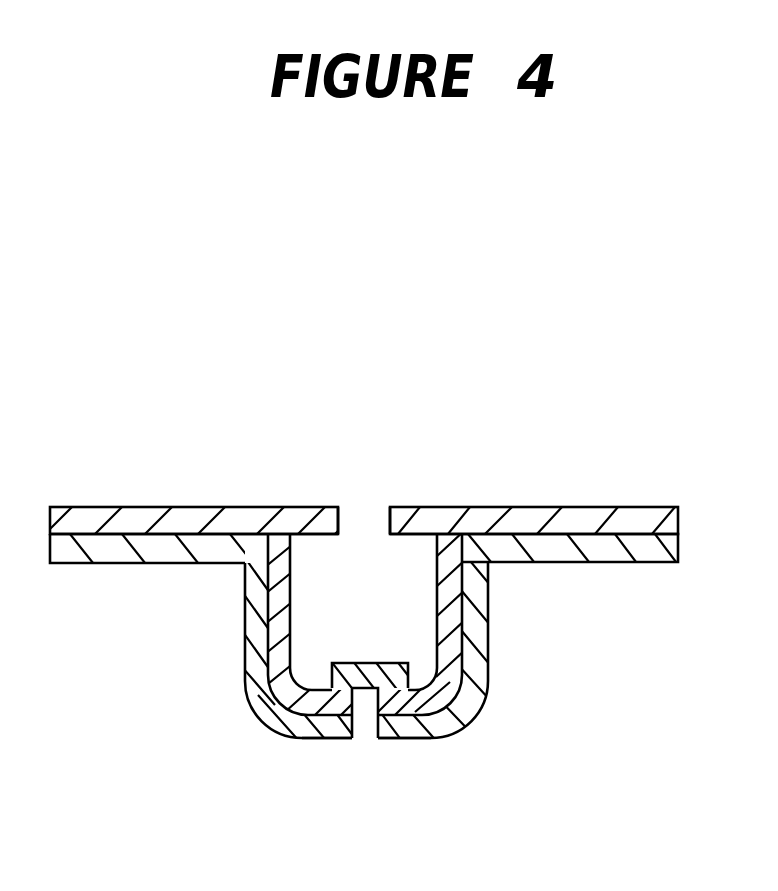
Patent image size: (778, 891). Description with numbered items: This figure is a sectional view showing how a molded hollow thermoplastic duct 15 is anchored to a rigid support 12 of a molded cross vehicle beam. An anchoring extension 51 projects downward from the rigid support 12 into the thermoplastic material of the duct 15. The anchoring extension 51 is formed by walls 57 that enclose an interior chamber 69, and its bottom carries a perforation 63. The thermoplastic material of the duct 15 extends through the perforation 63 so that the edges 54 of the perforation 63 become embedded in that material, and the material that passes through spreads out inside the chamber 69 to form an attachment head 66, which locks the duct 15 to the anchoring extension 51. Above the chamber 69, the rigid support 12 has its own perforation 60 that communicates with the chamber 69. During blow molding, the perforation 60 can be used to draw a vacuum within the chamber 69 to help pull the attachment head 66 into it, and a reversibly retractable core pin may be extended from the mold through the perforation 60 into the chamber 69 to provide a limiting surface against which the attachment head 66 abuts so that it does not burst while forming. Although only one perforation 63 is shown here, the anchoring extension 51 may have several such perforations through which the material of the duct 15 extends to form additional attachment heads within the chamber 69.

The rigid support 12 is at (190, 516).
The duct 15 is at (118, 551).
The anchoring extension 51 is at (478, 619).
The walls 57 is at (249, 653).
The edges 54 is at (327, 744).
The perforation 60 is at (360, 506).
The perforation 63 is at (363, 748).
The attachment head 66 is at (368, 663).
The chamber 69 is at (392, 592).